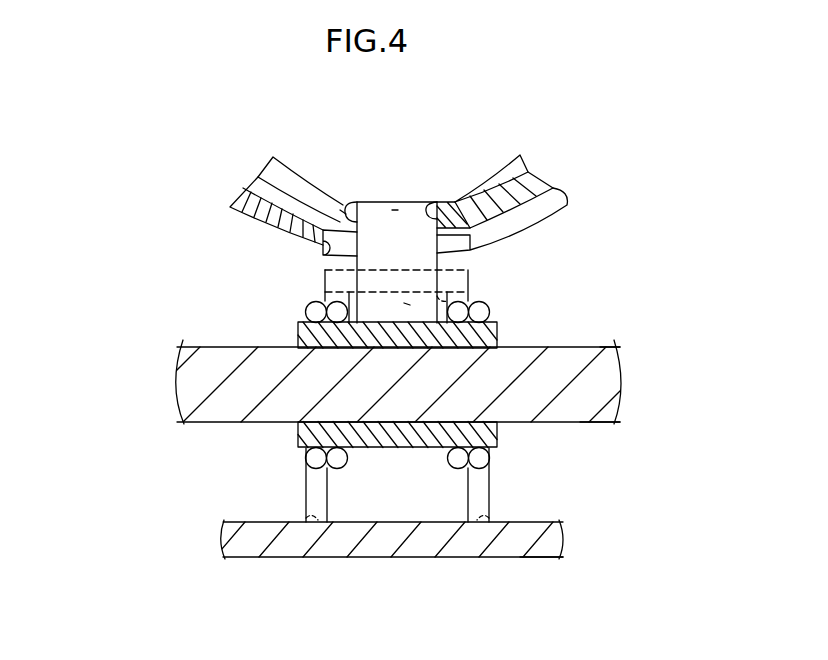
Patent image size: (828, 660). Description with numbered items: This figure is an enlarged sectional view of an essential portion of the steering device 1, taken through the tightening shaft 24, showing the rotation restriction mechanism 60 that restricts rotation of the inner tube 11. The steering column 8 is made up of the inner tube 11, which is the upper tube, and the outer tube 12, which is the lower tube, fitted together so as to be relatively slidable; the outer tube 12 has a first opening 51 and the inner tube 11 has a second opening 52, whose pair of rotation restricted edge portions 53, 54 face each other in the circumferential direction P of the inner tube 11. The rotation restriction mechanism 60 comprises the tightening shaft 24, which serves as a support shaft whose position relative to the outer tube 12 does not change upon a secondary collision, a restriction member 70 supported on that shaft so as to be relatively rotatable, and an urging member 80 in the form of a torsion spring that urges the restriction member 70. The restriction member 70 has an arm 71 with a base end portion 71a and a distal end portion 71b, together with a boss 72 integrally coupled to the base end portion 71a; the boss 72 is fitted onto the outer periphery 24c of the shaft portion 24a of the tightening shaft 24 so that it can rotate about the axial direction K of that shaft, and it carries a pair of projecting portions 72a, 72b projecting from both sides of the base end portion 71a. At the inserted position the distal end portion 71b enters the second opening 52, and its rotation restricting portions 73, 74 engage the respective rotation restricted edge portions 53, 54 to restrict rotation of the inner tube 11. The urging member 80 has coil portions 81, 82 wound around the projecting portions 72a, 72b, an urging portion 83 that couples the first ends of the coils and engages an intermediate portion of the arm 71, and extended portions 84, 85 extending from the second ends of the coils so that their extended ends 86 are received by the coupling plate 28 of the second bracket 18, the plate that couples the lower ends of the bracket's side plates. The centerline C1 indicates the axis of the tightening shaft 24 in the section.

The steering device 1 is at (618, 230).
The steering column 8 is at (158, 152).
The inner tube 11 is at (250, 183).
The outer tube 12 is at (247, 225).
The second bracket 18 is at (540, 560).
The tightening shaft 24 is at (202, 429).
The shaft portion 24a is at (612, 390).
The outer periphery 24c is at (595, 424).
The coupling plate 28 is at (560, 548).
The first opening 51 is at (330, 255).
The second opening 52 is at (419, 246).
The rotation restricted edge portion 53 is at (358, 207).
The rotation restricted edge portion 54 is at (436, 203).
The rotation restriction mechanism 60 is at (540, 277).
The restriction member 70 is at (397, 466).
The arm 71 is at (346, 290).
The base end portion 71a is at (406, 303).
The distal end portion 71b is at (395, 209).
The boss 72 is at (404, 418).
The projecting portion 72a is at (298, 438).
The projecting portion 72b is at (497, 431).
The rotation restricting portion 73 is at (349, 212).
The rotation restricting portion 74 is at (452, 204).
The urging member 80 is at (502, 305).
The coil portion 81 is at (305, 313).
The coil portion 82 is at (488, 312).
The urging portion 83 is at (437, 303).
The extended portion 84 is at (306, 480).
The extended portion 85 is at (489, 478).
The extended end 86 is at (489, 501).
The circumferential direction P is at (565, 138).
The axial direction K is at (45, 384).
The center line C1 is at (213, 384).